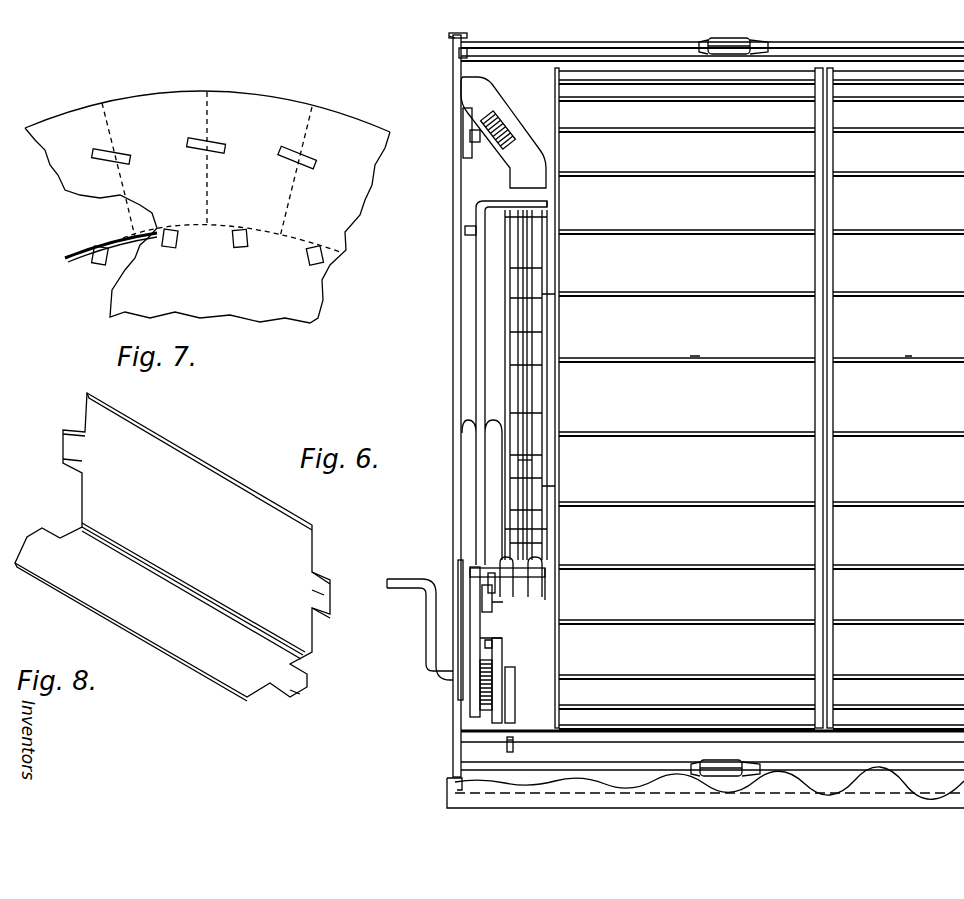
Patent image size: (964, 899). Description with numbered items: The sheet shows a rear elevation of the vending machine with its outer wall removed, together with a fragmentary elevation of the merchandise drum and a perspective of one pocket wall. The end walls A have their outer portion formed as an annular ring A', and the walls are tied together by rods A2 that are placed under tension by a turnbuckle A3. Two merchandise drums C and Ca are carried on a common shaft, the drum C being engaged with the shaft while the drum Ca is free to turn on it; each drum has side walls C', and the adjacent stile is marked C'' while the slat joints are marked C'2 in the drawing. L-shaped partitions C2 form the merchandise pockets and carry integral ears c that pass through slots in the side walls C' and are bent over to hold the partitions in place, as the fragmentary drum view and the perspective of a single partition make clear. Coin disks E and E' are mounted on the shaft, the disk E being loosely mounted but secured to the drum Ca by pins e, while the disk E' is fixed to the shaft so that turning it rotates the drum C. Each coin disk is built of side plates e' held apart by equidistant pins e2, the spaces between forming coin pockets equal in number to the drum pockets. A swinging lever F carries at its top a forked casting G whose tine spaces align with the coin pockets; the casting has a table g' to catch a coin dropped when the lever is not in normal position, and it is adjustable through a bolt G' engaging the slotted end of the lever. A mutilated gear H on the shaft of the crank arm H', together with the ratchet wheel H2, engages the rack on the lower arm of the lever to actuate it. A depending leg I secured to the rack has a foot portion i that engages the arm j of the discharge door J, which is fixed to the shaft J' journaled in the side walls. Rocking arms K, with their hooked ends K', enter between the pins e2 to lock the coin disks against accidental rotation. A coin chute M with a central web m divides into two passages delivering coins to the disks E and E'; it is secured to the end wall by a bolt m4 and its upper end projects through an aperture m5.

In FIG. 6, the end wall A is at (443, 405).
In FIG. 6, the annular ring A' is at (432, 635).
In FIG. 6, the rod A2 is at (626, 45).
In FIG. 6, the turnbuckle A3 is at (768, 44).
In FIG. 6, the merchandise drum C is at (898, 400).
In FIG. 6, the merchandise drum Ca is at (687, 400).
In FIG. 6, the side wall of the drum C' is at (805, 398).
In FIG. 7, the side wall of the drum C' is at (207, 207).
In FIG. 6, the slat stile C'' is at (709, 398).
In FIG. 7, the L-shaped partition C2 is at (110, 246).
In FIG. 8, the L-shaped partition C2 is at (172, 547).
In FIG. 6, the slat joint C'2 is at (798, 345).
In FIG. 7, the ear c is at (90, 266).
In FIG. 8, the ear c is at (330, 592).
In FIG. 6, the coin disk E is at (543, 385).
In FIG. 6, the coin disk E' is at (507, 385).
In FIG. 6, the pin e is at (556, 394).
In FIG. 6, the side plate e' is at (535, 459).
In FIG. 6, the pin e2 is at (566, 528).
In FIG. 6, the swinging lever F is at (480, 296).
In FIG. 6, the forked casting G is at (511, 214).
In FIG. 6, the bolt G' is at (452, 232).
In FIG. 6, the table g' is at (560, 191).
In FIG. 6, the mutilated gear H is at (502, 645).
In FIG. 6, the crank arm H' is at (419, 629).
In FIG. 6, the ratchet wheel H2 is at (506, 671).
In FIG. 6, the depending leg I is at (515, 690).
In FIG. 6, the foot portion i is at (515, 722).
In FIG. 6, the arm j is at (515, 705).
In FIG. 6, the discharge door J is at (688, 775).
In FIG. 6, the shaft J' is at (687, 739).
In FIG. 6, the rocking arm K is at (507, 598).
In FIG. 6, the pawl hook K' is at (534, 566).
In FIG. 6, the coin chute M is at (478, 95).
In FIG. 6, the central web m is at (500, 122).
In FIG. 6, the bolt m4 is at (474, 148).
In FIG. 6, the aperture m5 is at (456, 76).